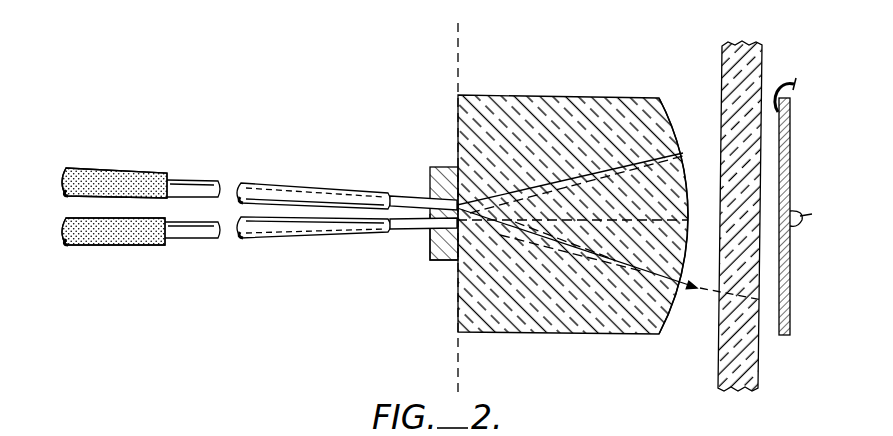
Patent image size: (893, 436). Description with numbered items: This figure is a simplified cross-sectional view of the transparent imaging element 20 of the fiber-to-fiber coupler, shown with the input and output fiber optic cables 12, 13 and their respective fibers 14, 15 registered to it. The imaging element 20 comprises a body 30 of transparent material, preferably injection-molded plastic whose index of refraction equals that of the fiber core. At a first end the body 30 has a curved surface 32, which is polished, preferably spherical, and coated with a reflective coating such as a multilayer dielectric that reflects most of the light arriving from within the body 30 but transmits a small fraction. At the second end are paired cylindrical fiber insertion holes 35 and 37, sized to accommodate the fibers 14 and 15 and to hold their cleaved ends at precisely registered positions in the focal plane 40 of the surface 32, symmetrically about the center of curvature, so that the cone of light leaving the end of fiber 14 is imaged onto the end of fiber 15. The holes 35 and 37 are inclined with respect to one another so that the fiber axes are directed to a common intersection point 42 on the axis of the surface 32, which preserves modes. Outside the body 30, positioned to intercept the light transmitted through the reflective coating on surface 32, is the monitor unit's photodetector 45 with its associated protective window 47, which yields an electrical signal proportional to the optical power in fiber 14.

The input fiber optic cable 12 is at (93, 180).
The output fiber optic cable 13 is at (100, 237).
The input fiber 14 is at (440, 200).
The output fiber 15 is at (437, 237).
The transparent imaging element 20 is at (584, 196).
The body 30 is at (565, 110).
The curved surface 32 is at (710, 110).
The fiber insertion hole 35 is at (420, 211).
The fiber insertion hole 37 is at (437, 243).
The focal plane 40 is at (512, 53).
The common intersection point 42 is at (686, 218).
The photodetector 45 is at (782, 337).
The protective window 47 is at (750, 43).